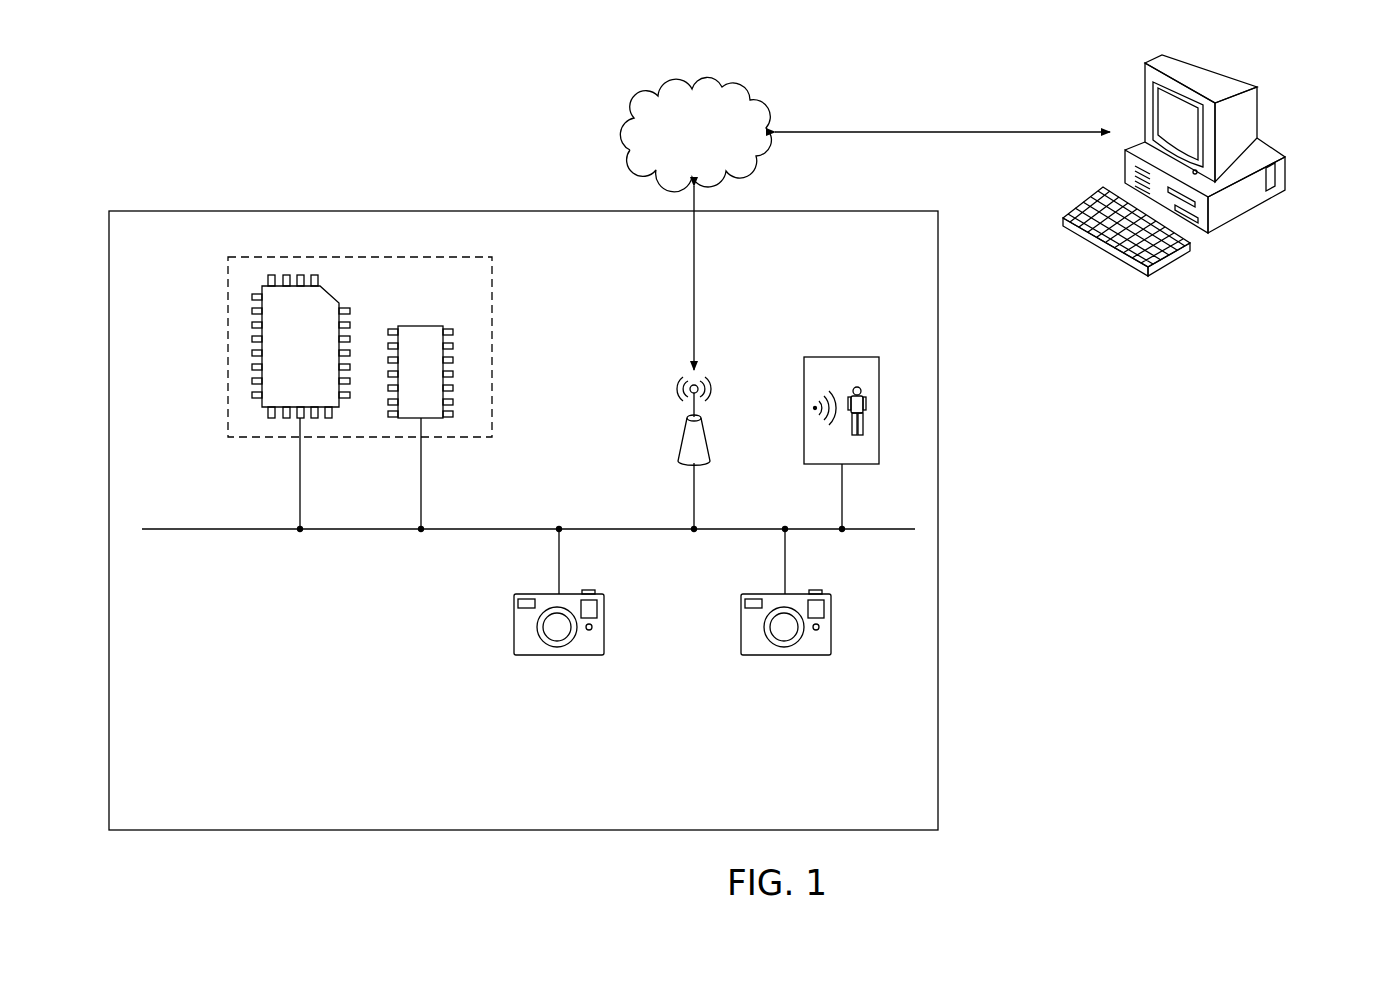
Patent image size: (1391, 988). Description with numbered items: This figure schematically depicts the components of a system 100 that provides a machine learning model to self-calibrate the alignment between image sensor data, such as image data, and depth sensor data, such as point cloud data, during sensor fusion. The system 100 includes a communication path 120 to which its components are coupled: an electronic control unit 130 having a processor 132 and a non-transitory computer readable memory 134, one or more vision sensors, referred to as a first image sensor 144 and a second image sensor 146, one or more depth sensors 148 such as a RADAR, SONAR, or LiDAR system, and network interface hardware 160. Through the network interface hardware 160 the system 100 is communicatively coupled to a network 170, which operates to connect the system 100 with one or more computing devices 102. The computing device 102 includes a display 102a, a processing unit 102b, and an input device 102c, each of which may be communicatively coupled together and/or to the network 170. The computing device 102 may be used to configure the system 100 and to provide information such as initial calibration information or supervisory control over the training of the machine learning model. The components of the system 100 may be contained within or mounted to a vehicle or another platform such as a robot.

The system 100 is at (523, 432).
The computing device 102 is at (1212, 169).
The display 102a is at (1145, 80).
The processing unit 102b is at (1248, 204).
The input device 102c is at (1170, 258).
The communication path 120 is at (202, 528).
The electronic control unit 130 is at (492, 338).
The processor 132 is at (252, 338).
The non-transitory computer readable memory 134 is at (418, 326).
The first image sensor 144 is at (557, 656).
The second image sensor 146 is at (784, 656).
The depth sensor 148 is at (845, 357).
The network interface hardware 160 is at (687, 425).
The network 170 is at (622, 128).